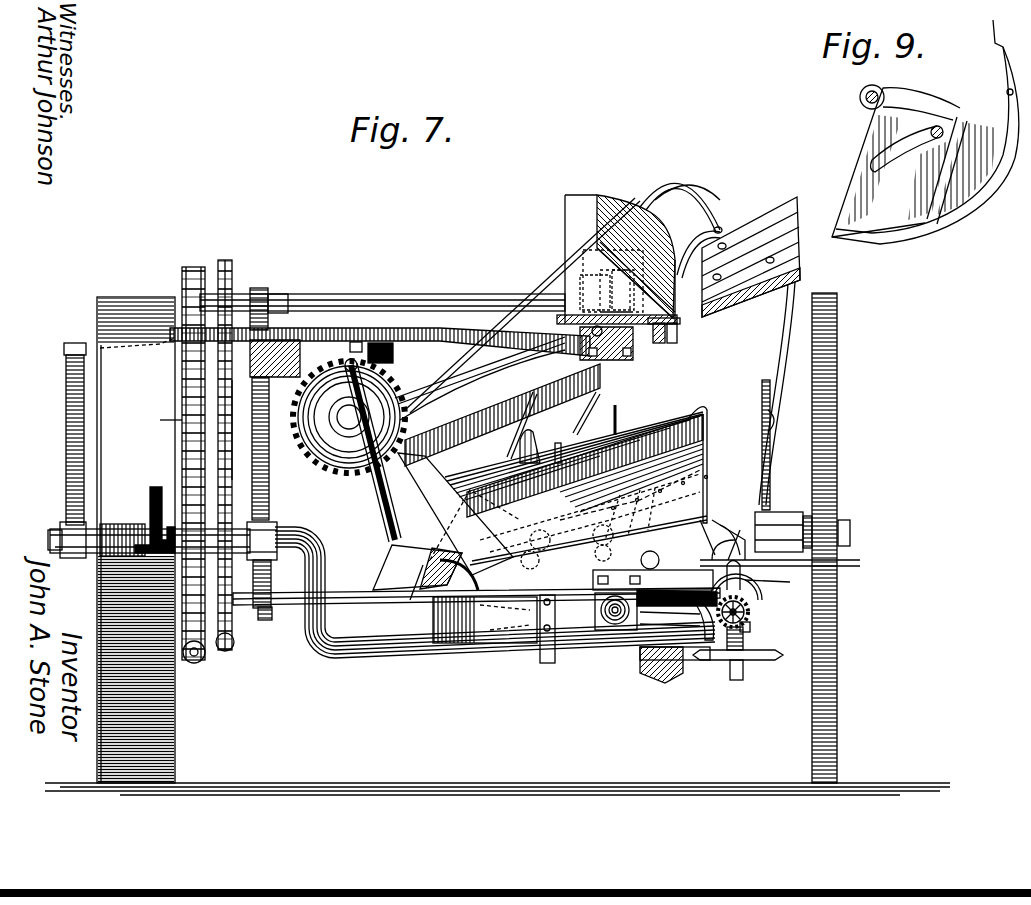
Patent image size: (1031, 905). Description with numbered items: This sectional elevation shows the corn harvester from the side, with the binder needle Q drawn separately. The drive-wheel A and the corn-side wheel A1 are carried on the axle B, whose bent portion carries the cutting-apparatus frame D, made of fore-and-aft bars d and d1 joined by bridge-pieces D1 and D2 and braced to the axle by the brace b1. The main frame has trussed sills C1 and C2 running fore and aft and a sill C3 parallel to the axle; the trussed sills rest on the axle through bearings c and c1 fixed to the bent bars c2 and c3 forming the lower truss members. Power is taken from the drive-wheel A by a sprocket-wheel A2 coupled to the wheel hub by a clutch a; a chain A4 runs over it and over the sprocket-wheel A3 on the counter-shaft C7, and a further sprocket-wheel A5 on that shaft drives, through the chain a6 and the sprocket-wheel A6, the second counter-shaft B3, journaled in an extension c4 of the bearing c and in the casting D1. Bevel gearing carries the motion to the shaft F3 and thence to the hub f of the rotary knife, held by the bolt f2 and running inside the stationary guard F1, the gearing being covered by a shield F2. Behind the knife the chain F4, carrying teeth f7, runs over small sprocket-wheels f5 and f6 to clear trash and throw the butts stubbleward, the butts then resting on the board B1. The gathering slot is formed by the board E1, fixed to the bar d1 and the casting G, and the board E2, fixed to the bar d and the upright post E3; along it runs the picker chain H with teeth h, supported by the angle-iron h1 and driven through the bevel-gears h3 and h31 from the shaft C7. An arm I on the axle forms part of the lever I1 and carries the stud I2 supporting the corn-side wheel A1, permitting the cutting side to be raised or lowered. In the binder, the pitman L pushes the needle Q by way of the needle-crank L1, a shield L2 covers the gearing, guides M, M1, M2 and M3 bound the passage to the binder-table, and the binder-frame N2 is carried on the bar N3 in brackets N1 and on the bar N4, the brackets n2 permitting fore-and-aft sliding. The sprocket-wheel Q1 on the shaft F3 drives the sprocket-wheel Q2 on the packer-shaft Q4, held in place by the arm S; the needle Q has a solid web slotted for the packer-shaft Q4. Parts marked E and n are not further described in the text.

In FIG. 7, the drive-wheel A is at (136, 540).
In FIG. 7, the corn-side wheel A1 is at (838, 350).
In FIG. 7, the sprocket-wheel A2 is at (201, 660).
In FIG. 7, the sprocket-wheel A3 is at (194, 267).
In FIG. 7, the chain A4 is at (158, 420).
In FIG. 7, the sprocket-wheel A5 is at (232, 268).
In FIG. 7, the sprocket-wheel A6 is at (229, 650).
In FIG. 7, the clutch a is at (128, 525).
In FIG. 7, the chain a6 is at (238, 448).
In FIG. 7, the axle B is at (318, 538).
In FIG. 7, the board B1 is at (488, 625).
In FIG. 7, the second counter-shaft B3 is at (340, 593).
In FIG. 7, the trussed sill C1 is at (275, 372).
In FIG. 7, the trussed sill C2 is at (78, 342).
In FIG. 7, the sill C3 is at (500, 334).
In FIG. 7, the counter-shaft C7 is at (310, 294).
In FIG. 7, the bearing c is at (273, 522).
In FIG. 7, the bearing c1 is at (70, 555).
In FIG. 7, the bent bar c2 is at (270, 455).
In FIG. 7, the bent bar c3 is at (66, 455).
In FIG. 7, the extension of bearing c4 is at (265, 620).
In FIG. 7, the frame of cutting apparatus D is at (728, 630).
In FIG. 7, the bridge-piece D1 is at (772, 587).
In FIG. 7, the bridge-piece D2 is at (766, 565).
In FIG. 7, the bar d is at (760, 660).
In FIG. 7, the bar d1 is at (655, 673).
In FIG. 7, the hood E is at (687, 206).
In FIG. 7, the board E1 is at (617, 259).
In FIG. 7, the second board E2 is at (738, 312).
In FIG. 7, the upright post E3 is at (770, 348).
In FIG. 7, the stationary guard F1 is at (685, 660).
In FIG. 7, the shield F2 is at (742, 492).
In FIG. 7, the shaft F3 is at (855, 563).
In FIG. 7, the chain F4 is at (605, 630).
In FIG. 7, the hub f is at (733, 650).
In FIG. 7, the bolt f2 is at (748, 600).
In FIG. 7, the small sprocket-wheel f5 is at (552, 663).
In FIG. 7, the small sprocket-wheel f6 is at (758, 627).
In FIG. 7, the teeth f7 is at (660, 614).
In FIG. 7, the casting G is at (630, 366).
In FIG. 7, the chain H is at (660, 348).
In FIG. 7, the picker-teeth h is at (681, 321).
In FIG. 7, the angle-iron h1 is at (665, 343).
In FIG. 7, the bevel-gear h3 is at (635, 292).
In FIG. 7, the bevel-gear h31 is at (576, 284).
In FIG. 7, the arm I is at (780, 512).
In FIG. 7, the lever I1 is at (770, 440).
In FIG. 7, the stud I2 is at (848, 520).
In FIG. 7, the pitman L is at (349, 450).
In FIG. 7, the needle-crank L1 is at (410, 600).
In FIG. 7, the shield L2 is at (459, 514).
In FIG. 7, the guide M is at (576, 472).
In FIG. 7, the guide M1 is at (686, 178).
In FIG. 7, the guide M2 is at (480, 378).
In FIG. 7, the guide M3 is at (520, 264).
In FIG. 7, the bracket N1 is at (536, 432).
In FIG. 7, the binder-frame N2 is at (385, 545).
In FIG. 7, the bar N3 is at (385, 343).
In FIG. 7, the bar N4 is at (658, 512).
In FIG. 7, the pin n is at (356, 342).
In FIG. 7, the bracket n2 is at (645, 553).
In FIG. 7, the needle Q is at (607, 414).
In FIG. 9, the needle Q is at (1000, 55).
In FIG. 7, the binder-driving sprocket-wheel Q1 is at (715, 523).
In FIG. 7, the packer-shaft sprocket-wheel Q2 is at (525, 551).
In FIG. 9, the packer-shaft Q4 is at (940, 126).
In FIG. 7, the arm S is at (612, 528).
In FIG. 7, the brace b1 is at (742, 527).